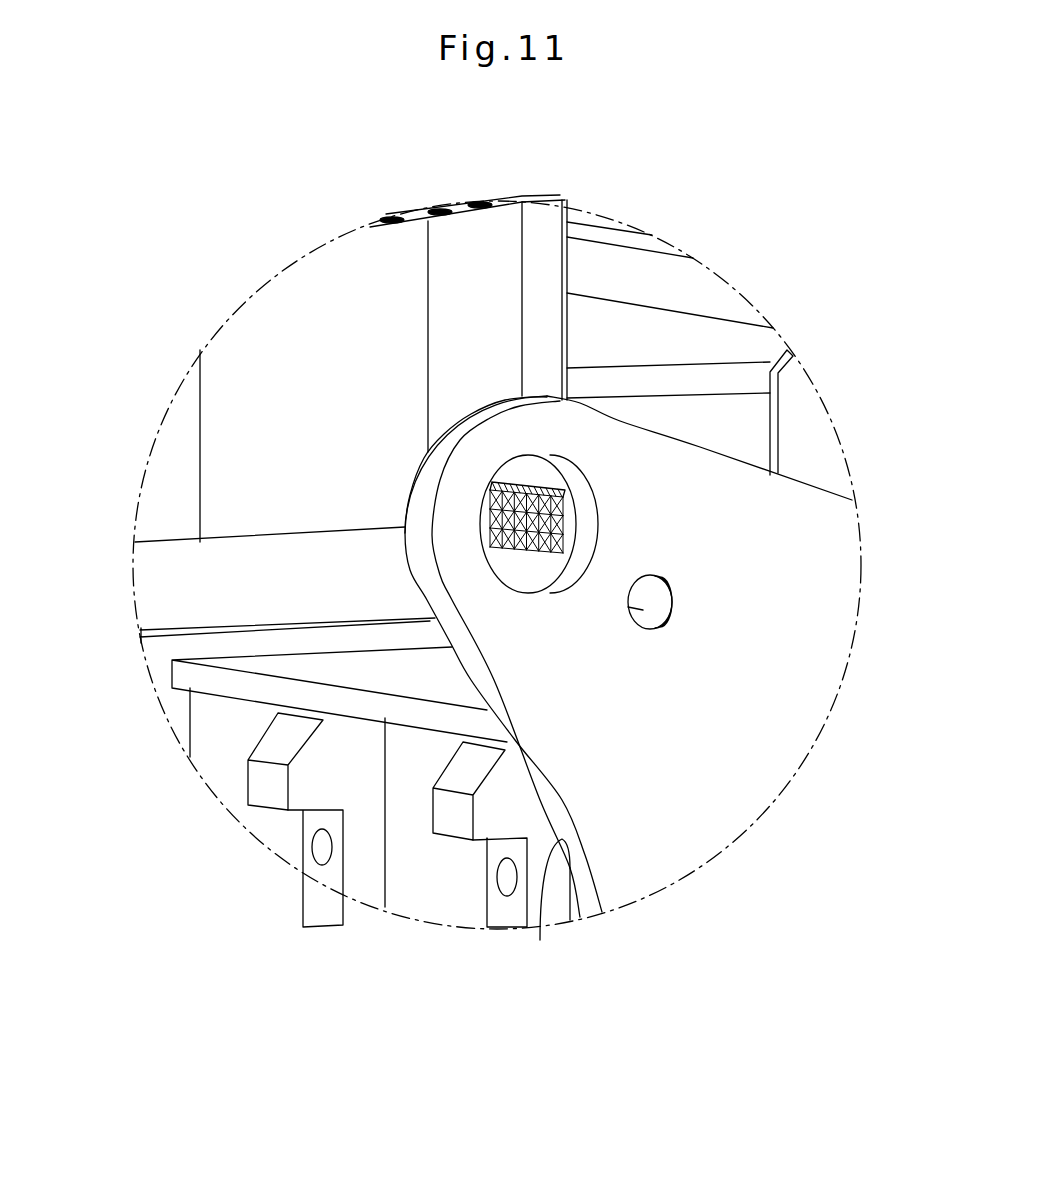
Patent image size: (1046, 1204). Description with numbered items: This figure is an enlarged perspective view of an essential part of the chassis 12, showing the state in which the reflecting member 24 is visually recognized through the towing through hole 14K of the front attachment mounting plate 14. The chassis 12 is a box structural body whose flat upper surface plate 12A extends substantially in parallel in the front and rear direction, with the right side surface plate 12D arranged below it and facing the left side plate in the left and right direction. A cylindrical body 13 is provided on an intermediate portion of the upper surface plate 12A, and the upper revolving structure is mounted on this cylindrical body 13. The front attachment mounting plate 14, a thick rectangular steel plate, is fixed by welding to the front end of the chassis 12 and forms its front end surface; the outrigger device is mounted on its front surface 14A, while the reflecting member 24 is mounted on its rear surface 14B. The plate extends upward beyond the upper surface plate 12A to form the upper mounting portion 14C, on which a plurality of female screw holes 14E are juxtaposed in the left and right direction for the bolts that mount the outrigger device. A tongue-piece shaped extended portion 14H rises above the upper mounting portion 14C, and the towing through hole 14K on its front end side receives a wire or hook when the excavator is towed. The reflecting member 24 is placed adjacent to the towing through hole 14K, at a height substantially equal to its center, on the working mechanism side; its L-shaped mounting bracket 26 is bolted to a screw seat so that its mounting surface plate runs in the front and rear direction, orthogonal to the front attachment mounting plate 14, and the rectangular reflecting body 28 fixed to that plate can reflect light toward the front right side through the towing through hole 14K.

The chassis 12 is at (428, 872).
The upper surface plate 12A is at (237, 687).
The right side surface plate 12D is at (275, 822).
The cylindrical body 13 is at (285, 300).
The front attachment mounting plate 14 is at (748, 712).
The front surface 14A is at (715, 775).
The rear surface 14B is at (540, 940).
The upper mounting portion 14C is at (817, 532).
The female screw hole 14E is at (673, 600).
The extended portion 14H is at (430, 552).
The towing through hole 14K is at (563, 577).
The reflecting member 24 is at (528, 482).
The mounting bracket 26 is at (572, 523).
The reflecting body 28 is at (488, 513).